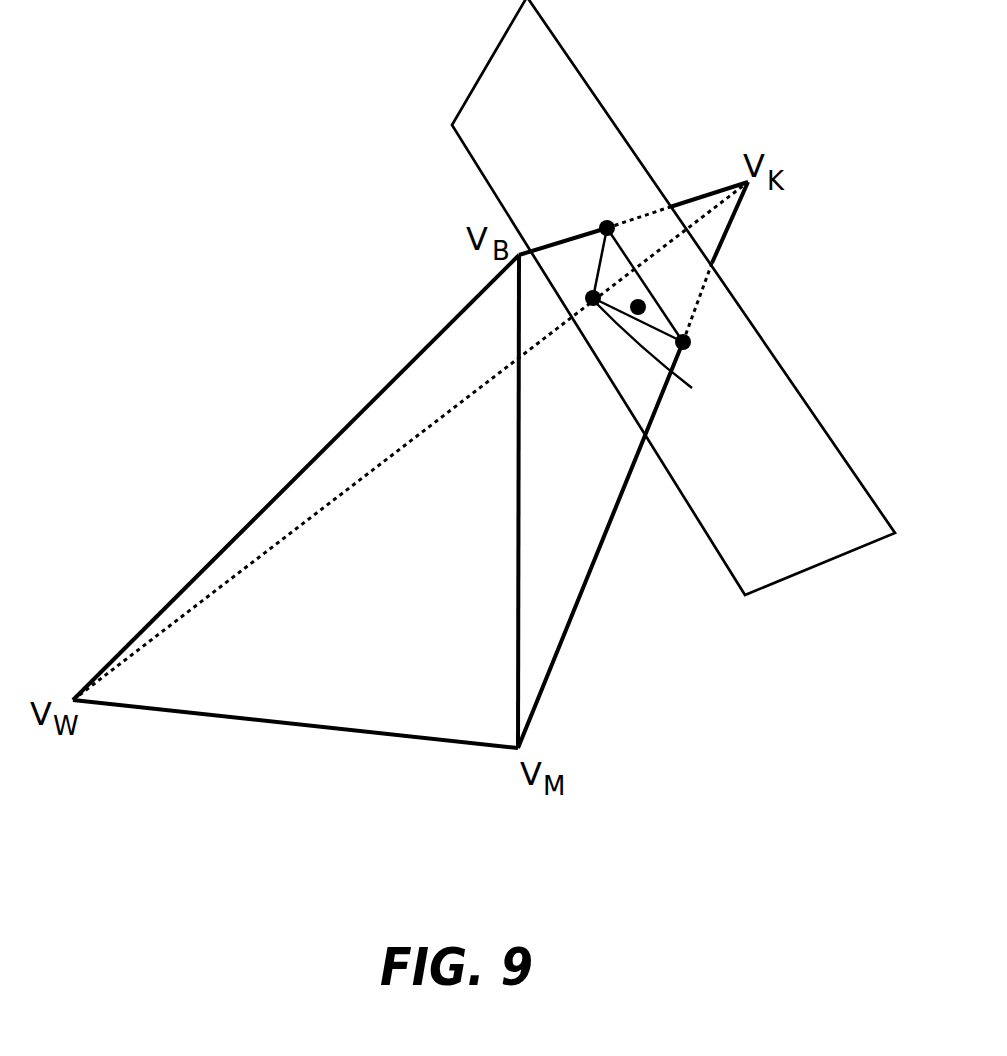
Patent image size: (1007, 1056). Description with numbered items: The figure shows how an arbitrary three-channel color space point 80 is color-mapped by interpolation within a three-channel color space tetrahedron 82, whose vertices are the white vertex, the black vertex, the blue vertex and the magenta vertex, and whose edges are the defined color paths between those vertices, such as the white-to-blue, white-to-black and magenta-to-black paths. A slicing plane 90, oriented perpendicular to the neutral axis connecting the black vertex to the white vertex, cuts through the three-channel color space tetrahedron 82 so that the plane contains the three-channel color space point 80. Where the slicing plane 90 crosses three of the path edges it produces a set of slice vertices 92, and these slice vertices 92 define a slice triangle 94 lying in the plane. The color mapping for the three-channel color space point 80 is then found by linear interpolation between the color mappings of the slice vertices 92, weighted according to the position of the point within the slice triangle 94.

The slicing plane 90 is at (530, 43).
The slice vertices 92 is at (607, 226).
The three-channel color space point 80 is at (647, 307).
The slice triangle 94 is at (670, 320).
The three-channel color space tetrahedron 82 is at (665, 465).